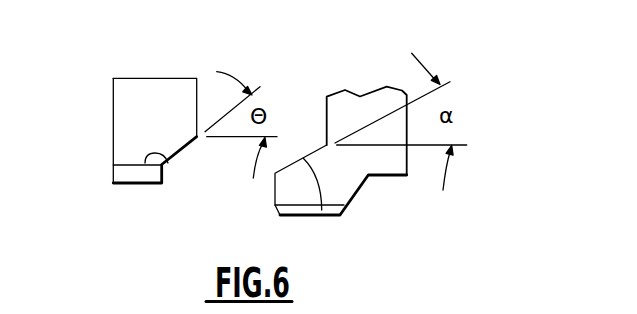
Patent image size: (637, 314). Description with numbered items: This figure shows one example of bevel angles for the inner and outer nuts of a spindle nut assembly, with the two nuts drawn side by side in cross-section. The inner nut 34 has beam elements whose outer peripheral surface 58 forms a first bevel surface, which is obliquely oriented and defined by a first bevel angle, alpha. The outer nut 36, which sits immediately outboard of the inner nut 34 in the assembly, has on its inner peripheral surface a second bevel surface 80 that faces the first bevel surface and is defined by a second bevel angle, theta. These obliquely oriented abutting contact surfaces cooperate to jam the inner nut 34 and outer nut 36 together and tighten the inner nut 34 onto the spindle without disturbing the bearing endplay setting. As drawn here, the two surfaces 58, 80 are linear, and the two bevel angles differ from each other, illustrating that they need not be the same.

The outer nut 36 is at (170, 127).
The second bevel surface 80 is at (145, 163).
The inner nut 34 is at (285, 187).
The outer peripheral surface 58 is at (322, 210).